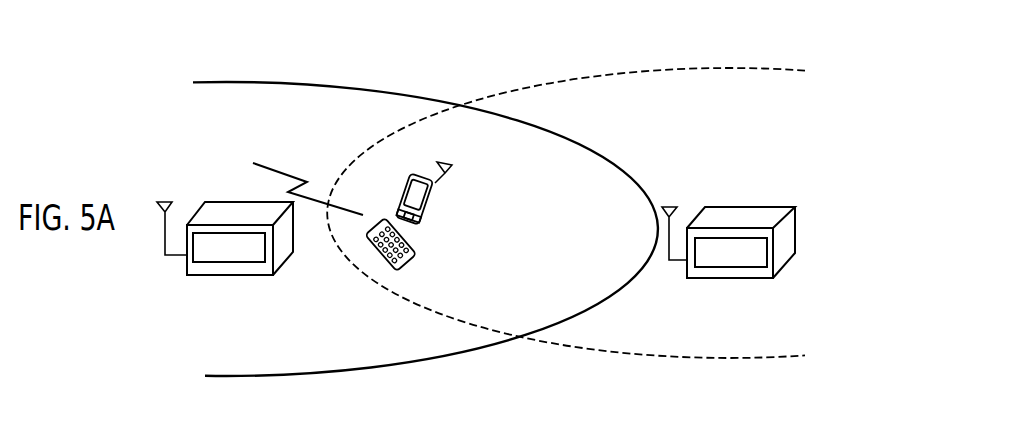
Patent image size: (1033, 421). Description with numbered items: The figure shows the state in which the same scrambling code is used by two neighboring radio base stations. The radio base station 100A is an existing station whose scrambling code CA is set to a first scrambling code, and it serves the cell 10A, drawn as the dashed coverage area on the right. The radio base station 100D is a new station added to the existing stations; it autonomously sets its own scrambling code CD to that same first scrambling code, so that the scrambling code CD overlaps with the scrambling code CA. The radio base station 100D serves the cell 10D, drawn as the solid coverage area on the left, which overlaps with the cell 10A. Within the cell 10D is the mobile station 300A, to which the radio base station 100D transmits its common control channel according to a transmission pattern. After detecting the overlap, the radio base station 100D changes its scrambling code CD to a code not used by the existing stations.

The cell 10D is at (275, 82).
The cell 10A is at (705, 67).
The radio base station 100D is at (222, 202).
The radio base station 100A is at (742, 207).
The mobile station 300A is at (433, 205).
The scrambling code CD is at (225, 262).
The scrambling code CA is at (725, 267).